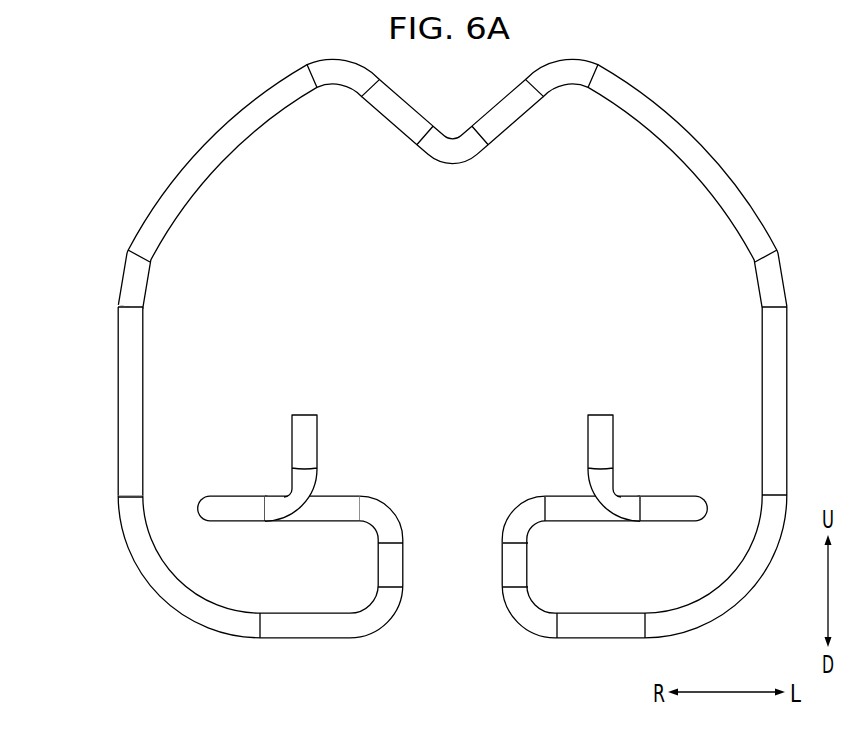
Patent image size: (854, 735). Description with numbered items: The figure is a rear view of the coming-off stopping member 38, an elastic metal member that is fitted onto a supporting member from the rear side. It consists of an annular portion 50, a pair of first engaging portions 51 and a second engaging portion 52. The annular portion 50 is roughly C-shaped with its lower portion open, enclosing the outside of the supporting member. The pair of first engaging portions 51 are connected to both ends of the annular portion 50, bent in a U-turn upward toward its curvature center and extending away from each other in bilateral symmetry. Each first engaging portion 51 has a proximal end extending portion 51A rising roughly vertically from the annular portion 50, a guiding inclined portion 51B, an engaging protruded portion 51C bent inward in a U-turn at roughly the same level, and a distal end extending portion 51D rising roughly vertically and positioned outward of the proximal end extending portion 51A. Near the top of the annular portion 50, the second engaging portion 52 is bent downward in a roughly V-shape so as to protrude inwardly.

The coming-off stopping member 38 is at (125, 188).
The annular portion 50 is at (122, 363).
The first engaging portion 51 is at (655, 470).
The proximal end extending portion 51A is at (395, 560).
The guiding inclined portion 51B is at (337, 504).
The engaging protruded portion 51C is at (227, 503).
The distal end extending portion 51D is at (301, 424).
The second engaging portion 52 is at (452, 156).